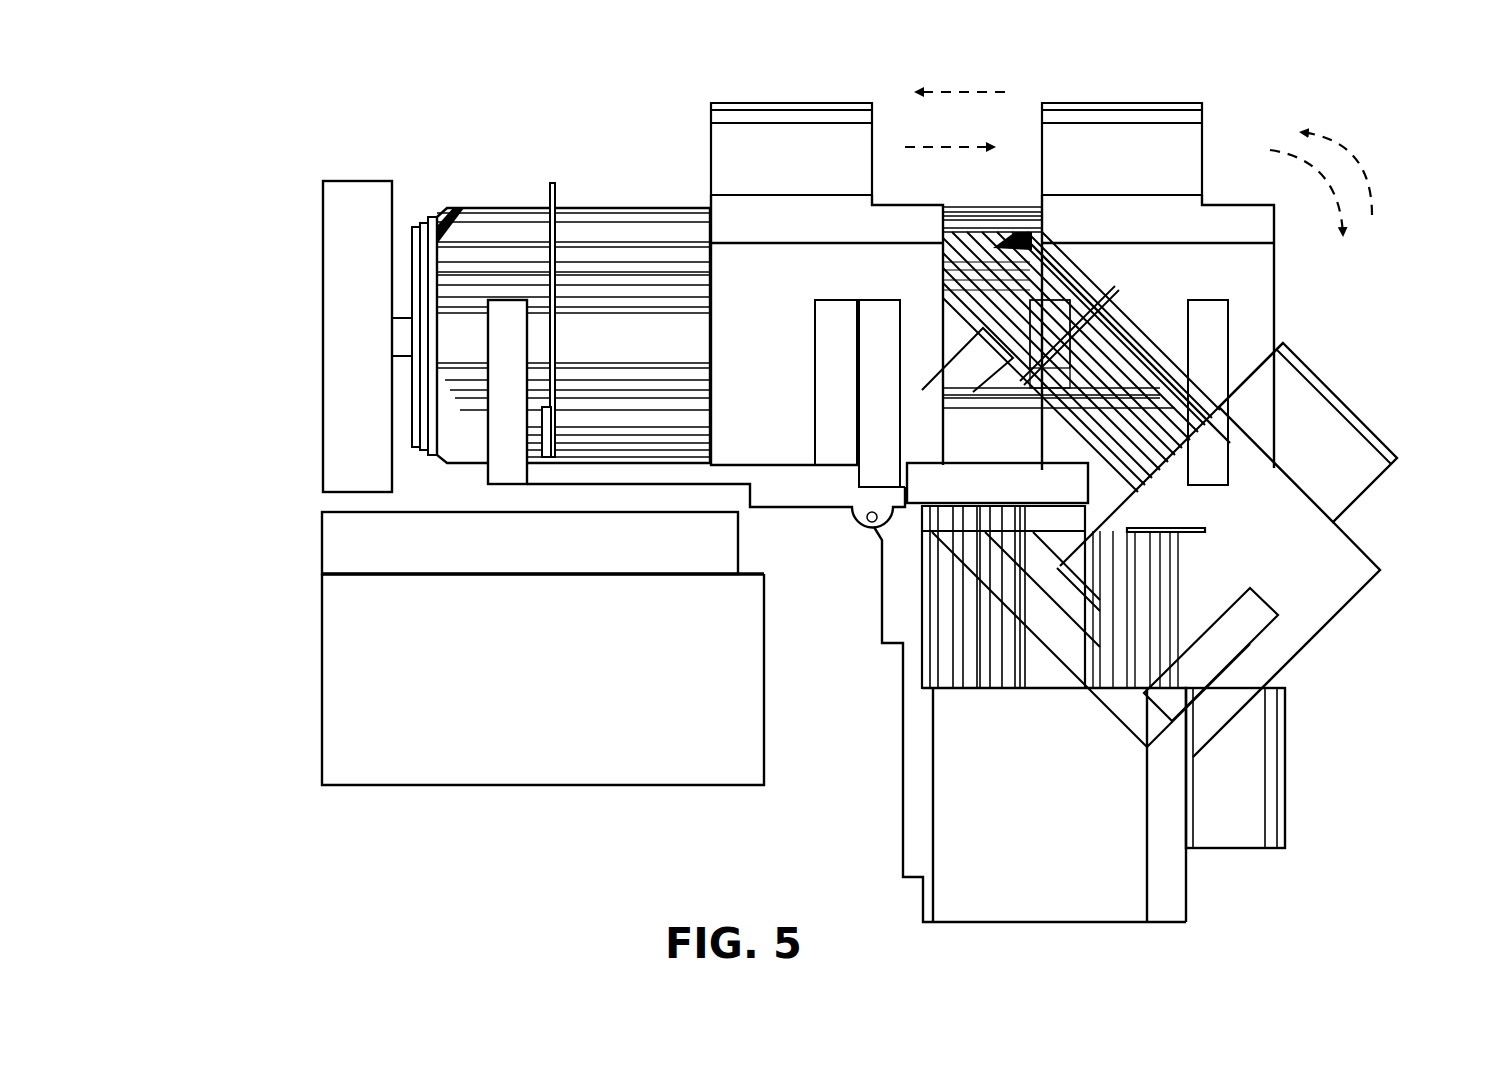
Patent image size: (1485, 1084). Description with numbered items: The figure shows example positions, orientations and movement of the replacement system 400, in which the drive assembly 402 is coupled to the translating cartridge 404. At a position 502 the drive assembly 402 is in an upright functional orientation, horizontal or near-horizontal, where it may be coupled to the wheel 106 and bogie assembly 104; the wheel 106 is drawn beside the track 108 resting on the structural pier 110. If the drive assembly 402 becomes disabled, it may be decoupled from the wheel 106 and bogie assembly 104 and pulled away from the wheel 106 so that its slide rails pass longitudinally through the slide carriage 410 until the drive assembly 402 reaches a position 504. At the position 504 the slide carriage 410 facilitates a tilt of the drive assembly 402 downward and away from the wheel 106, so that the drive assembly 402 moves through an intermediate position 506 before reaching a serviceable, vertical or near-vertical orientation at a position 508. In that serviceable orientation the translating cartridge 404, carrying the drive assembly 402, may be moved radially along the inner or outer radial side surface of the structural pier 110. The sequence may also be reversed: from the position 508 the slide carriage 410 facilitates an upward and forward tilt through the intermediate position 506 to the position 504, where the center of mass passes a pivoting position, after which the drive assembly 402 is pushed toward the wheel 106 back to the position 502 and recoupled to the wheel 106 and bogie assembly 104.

The replacement system 400 is at (214, 72).
The bogie assembly 104 is at (322, 385).
The wheel 106 is at (253, 320).
The track 108 is at (320, 542).
The structural pier 110 is at (320, 677).
The drive assembly 402 is at (648, 208).
The translating cartridge 404 is at (503, 312).
The slide carriage 410 is at (827, 493).
The position 502 is at (628, 126).
The position 504 is at (1106, 88).
The intermediate position 506 is at (1366, 514).
The position 508 is at (1304, 798).